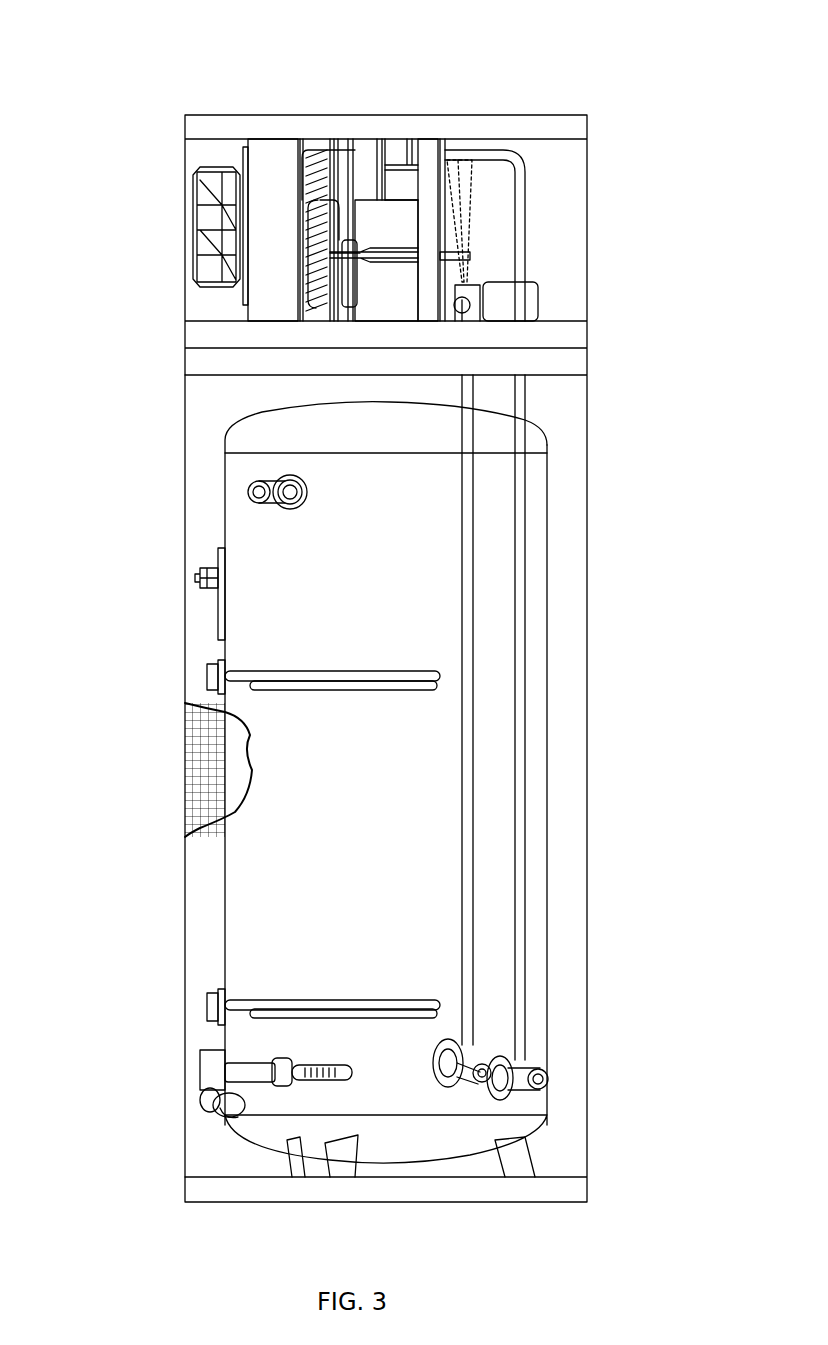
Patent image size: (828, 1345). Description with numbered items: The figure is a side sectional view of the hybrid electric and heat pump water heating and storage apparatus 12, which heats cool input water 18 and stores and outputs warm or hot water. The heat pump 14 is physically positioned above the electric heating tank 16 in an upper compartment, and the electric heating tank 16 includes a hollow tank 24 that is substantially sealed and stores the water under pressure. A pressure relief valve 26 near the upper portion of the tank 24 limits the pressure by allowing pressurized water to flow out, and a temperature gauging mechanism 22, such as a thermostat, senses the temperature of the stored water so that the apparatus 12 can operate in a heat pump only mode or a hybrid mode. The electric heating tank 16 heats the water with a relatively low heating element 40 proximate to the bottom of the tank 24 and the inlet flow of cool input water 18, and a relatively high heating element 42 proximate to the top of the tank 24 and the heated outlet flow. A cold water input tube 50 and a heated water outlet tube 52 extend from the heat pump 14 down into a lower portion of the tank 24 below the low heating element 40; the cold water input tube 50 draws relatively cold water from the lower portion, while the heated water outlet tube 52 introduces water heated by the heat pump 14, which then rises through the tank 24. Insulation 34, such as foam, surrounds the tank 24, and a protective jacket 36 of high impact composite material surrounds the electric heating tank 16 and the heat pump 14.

The water heating and storage apparatus 12 is at (240, 64).
The heat pump 14 is at (165, 115).
The electric heating tank 16 is at (264, 547).
The cool input water 18 is at (192, 1106).
The temperature gauging mechanism 22 is at (196, 578).
The tank 24 is at (550, 655).
The pressure relief valve 26 is at (248, 492).
The insulation 34 is at (192, 760).
The protective jacket 36 is at (184, 888).
The low heating element 40 is at (206, 1015).
The high heating element 42 is at (206, 677).
The cold water input tube 50 is at (476, 500).
The heated water outlet tube 52 is at (532, 478).